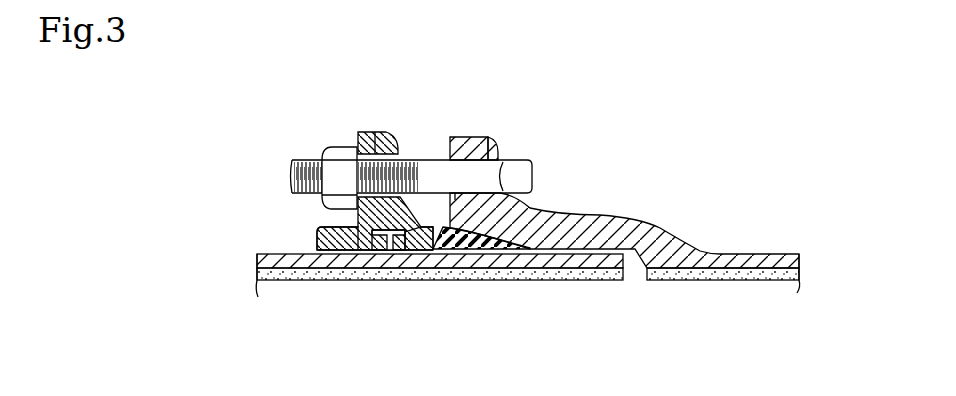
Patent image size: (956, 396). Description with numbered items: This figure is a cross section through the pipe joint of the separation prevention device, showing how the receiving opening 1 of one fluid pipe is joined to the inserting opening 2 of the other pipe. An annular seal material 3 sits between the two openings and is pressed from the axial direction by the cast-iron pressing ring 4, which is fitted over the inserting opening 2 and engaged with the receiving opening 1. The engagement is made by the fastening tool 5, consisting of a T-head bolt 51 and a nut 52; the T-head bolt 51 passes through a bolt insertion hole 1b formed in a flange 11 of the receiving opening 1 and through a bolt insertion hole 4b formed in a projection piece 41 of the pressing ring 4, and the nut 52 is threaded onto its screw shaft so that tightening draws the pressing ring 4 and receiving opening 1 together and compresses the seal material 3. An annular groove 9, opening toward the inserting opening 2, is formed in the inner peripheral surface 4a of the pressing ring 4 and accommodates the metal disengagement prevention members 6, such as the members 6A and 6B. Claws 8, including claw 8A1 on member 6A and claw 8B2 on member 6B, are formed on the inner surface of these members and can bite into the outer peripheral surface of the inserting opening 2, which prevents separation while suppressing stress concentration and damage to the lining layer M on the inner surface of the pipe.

The receiving opening 1 is at (624, 177).
The bolt insertion hole 1b is at (494, 150).
The flange 11 is at (473, 137).
The inserting opening 2 is at (266, 254).
The seal material 3 is at (510, 252).
The pressing ring 4 is at (351, 218).
The inner peripheral surface 4a is at (335, 252).
The bolt insertion hole 4b is at (370, 132).
The projection piece 41 is at (356, 133).
The fastening tool 5 is at (368, 164).
The T-head bolt 51 is at (292, 173).
The nut 52 is at (322, 148).
The disengagement prevention member 6 is at (329, 276).
The disengagement prevention member 6A is at (397, 255).
The disengagement prevention member 6B is at (320, 226).
The claw 8 is at (395, 275).
The claw 8A1 is at (400, 254).
The claw 8B2 is at (384, 255).
The annular groove 9 is at (388, 232).
The lining layer M is at (592, 280).